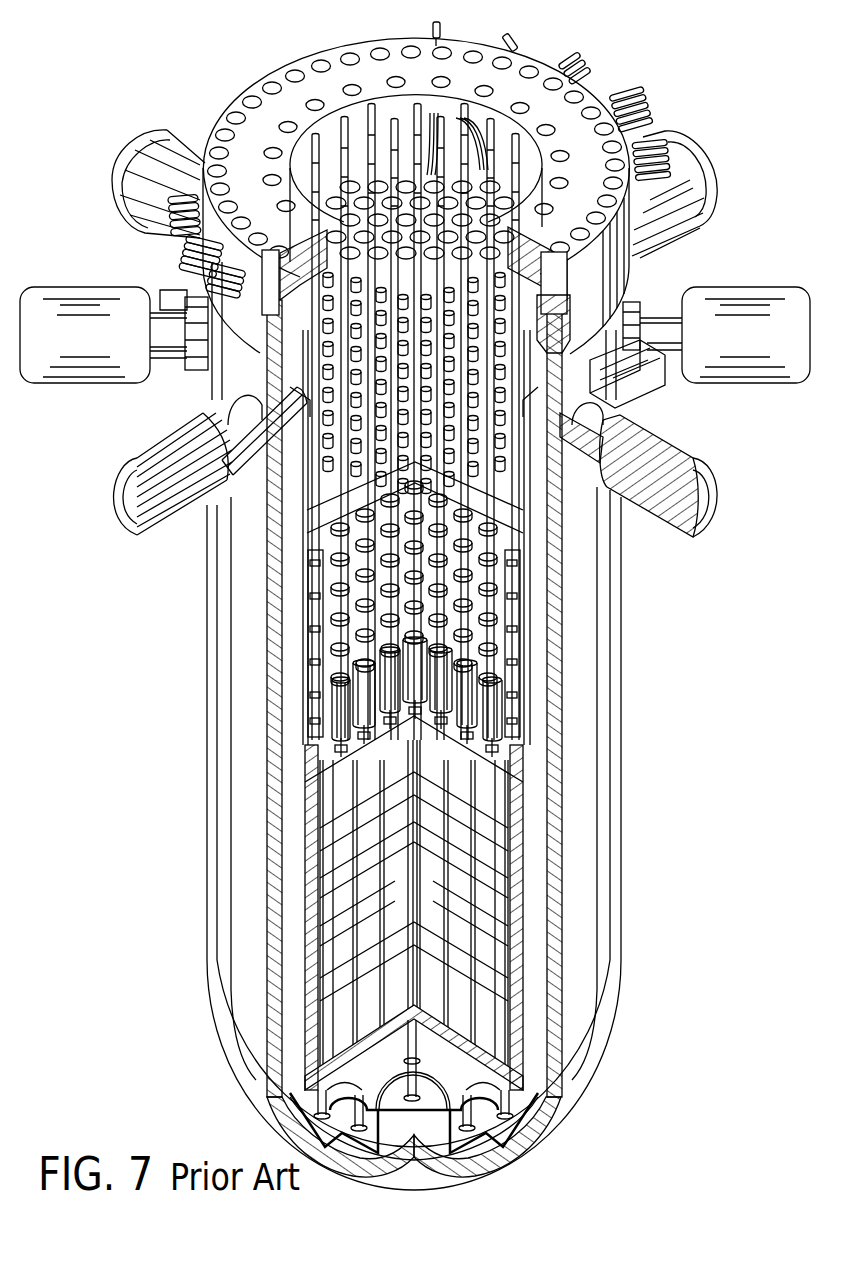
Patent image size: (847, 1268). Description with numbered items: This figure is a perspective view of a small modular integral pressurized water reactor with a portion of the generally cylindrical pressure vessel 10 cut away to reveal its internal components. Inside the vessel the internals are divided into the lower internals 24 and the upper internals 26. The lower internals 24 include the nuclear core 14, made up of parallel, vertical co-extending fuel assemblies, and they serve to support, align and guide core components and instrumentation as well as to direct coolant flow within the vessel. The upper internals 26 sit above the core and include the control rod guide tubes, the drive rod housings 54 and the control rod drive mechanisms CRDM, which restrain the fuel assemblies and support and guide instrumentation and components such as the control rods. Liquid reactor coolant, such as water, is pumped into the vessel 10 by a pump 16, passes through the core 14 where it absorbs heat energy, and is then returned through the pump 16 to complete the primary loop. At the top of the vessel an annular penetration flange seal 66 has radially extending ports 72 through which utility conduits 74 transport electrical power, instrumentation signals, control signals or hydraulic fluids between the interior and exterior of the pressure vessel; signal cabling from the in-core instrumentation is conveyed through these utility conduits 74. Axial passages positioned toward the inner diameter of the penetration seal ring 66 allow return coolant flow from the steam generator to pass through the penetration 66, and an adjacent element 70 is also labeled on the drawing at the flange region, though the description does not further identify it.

The pressure vessel 10 is at (588, 799).
The nuclear core 14 is at (429, 890).
The pump 16 is at (745, 372).
The lower internals 24 is at (347, 927).
The upper internals 26 is at (457, 613).
The drive rod housings 54 is at (467, 483).
The annular penetration flange seal 66 is at (605, 262).
The vessel flange 70 is at (612, 290).
The radially extending ports 72 is at (200, 233).
The utility conduits 74 is at (190, 252).
The control rod drive mechanisms CRDM is at (440, 145).